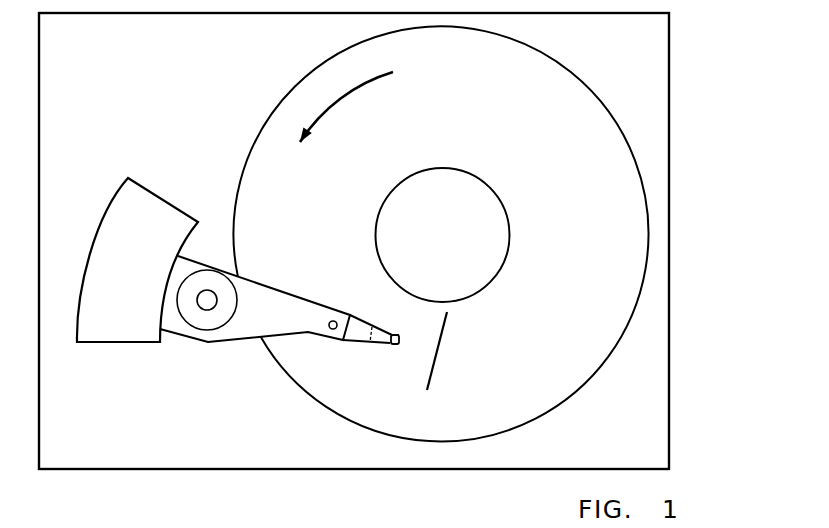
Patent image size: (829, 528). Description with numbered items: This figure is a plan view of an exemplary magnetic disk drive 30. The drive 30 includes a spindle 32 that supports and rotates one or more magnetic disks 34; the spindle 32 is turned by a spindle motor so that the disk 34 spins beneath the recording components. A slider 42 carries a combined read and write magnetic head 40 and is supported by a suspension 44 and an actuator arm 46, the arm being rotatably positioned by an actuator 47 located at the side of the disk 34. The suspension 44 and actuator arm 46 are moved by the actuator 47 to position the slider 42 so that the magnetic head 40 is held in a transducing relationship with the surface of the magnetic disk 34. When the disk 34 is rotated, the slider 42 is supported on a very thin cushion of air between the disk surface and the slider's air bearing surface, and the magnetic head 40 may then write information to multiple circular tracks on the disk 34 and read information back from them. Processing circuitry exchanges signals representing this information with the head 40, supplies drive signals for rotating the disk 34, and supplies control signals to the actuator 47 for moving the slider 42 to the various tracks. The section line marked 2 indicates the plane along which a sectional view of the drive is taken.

The magnetic disk drive 30 is at (692, 48).
The spindle 32 is at (482, 175).
The magnetic disk 34 is at (590, 257).
The magnetic head 40 is at (402, 345).
The slider 42 is at (397, 336).
The suspension 44 is at (358, 345).
The actuator arm 46 is at (298, 302).
The actuator 47 is at (170, 208).
The section line 2- 2 is at (458, 319).